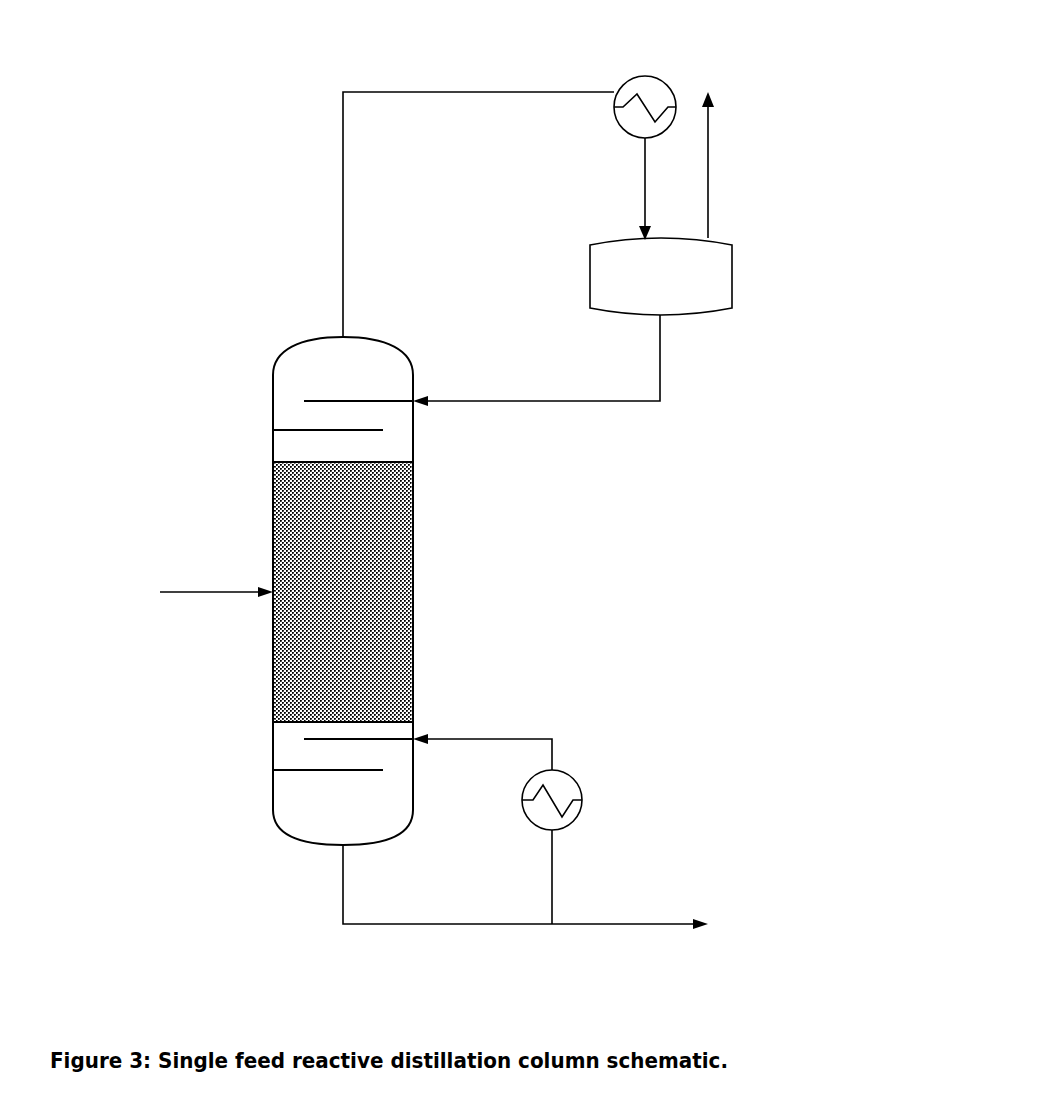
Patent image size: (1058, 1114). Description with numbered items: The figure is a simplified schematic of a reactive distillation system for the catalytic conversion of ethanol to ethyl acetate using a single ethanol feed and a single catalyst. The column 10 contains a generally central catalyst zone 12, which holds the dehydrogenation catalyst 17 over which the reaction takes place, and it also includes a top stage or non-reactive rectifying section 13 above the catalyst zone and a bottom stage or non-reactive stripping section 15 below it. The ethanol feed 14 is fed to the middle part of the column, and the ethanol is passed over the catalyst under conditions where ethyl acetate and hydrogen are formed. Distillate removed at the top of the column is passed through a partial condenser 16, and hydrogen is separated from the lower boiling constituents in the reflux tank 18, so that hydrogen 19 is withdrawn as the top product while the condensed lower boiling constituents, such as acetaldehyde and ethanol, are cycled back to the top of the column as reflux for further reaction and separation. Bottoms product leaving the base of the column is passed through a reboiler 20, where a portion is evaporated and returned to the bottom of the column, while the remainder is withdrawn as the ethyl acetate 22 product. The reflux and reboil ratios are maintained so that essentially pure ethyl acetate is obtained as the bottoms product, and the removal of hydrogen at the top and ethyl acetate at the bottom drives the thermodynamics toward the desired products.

The column 10 is at (273, 448).
The catalyst zone 12 is at (293, 553).
The non-reactive rectifying section 13 is at (293, 404).
The ethanol feed 14 is at (162, 593).
The non-reactive stripping section 15 is at (293, 758).
The partial condenser 16 is at (645, 76).
The catalyst 17 is at (358, 532).
The reflux tank 18 is at (732, 275).
The hydrogen outlet 19 is at (770, 140).
The reboiler 20 is at (577, 778).
The ethyl acetate product 22 is at (629, 898).